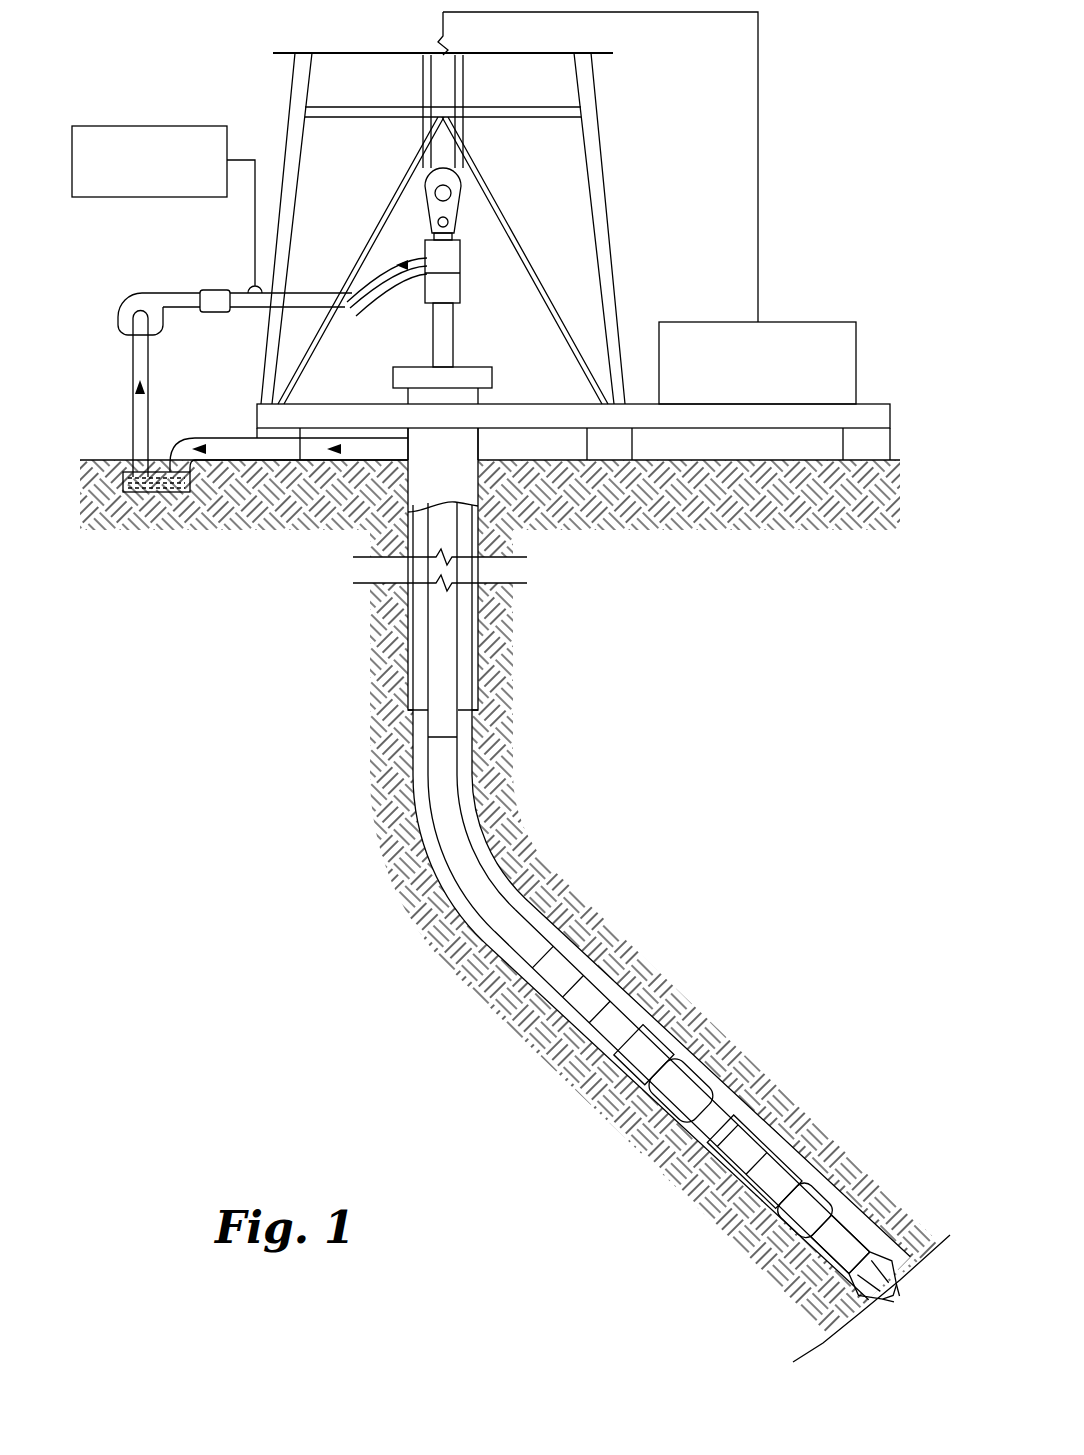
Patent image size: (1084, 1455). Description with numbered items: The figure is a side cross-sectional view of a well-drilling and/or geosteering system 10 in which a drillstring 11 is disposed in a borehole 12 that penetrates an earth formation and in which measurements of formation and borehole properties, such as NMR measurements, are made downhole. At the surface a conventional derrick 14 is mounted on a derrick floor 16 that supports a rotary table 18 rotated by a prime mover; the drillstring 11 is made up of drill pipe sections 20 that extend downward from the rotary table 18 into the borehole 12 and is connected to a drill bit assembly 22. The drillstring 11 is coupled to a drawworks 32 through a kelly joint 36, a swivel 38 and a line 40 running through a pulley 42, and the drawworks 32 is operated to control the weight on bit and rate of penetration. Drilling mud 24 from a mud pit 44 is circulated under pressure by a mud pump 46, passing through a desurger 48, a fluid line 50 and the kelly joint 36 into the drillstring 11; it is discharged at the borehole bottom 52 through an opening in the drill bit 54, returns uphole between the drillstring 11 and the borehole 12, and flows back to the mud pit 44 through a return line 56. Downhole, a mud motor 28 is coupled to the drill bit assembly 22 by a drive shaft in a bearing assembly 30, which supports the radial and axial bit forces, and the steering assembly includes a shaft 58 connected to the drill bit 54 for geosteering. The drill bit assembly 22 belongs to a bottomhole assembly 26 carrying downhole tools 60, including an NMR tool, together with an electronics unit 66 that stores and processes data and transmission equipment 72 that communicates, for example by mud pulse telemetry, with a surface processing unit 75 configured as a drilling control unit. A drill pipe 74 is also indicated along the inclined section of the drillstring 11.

The well-drilling and/or geosteering system 10 is at (250, 74).
The drillstring 11 is at (472, 620).
The borehole 12 is at (482, 818).
The derrick 14 is at (612, 218).
The derrick floor 16 is at (527, 403).
The rotary table 18 is at (478, 366).
The drill pipe sections 20 is at (458, 668).
The drill bit assembly 22 is at (876, 1237).
The drilling mud 24 is at (142, 492).
The bottomhole assembly 26 is at (775, 1135).
The mud motor 28 is at (613, 1033).
The bearing assembly 30 is at (770, 1262).
The drawworks 32 is at (812, 322).
The kelly joint 36 is at (433, 345).
The swivel 38 is at (462, 255).
The line 40 is at (466, 80).
The pulley 42 is at (433, 205).
The mud pit 44 is at (180, 492).
The mud pump 46 is at (140, 290).
The desurger 48 is at (215, 290).
The fluid line 50 is at (257, 313).
The borehole bottom 52 is at (793, 1362).
The drill bit 54 is at (903, 1227).
The return line 56 is at (240, 438).
The shaft 58 is at (792, 1288).
The downhole tool 60 is at (745, 1205).
The electronics unit 66 is at (700, 1175).
The transmission equipment 72 is at (655, 1135).
The drill pipe 74 is at (447, 790).
The surface processing unit 75 is at (118, 126).